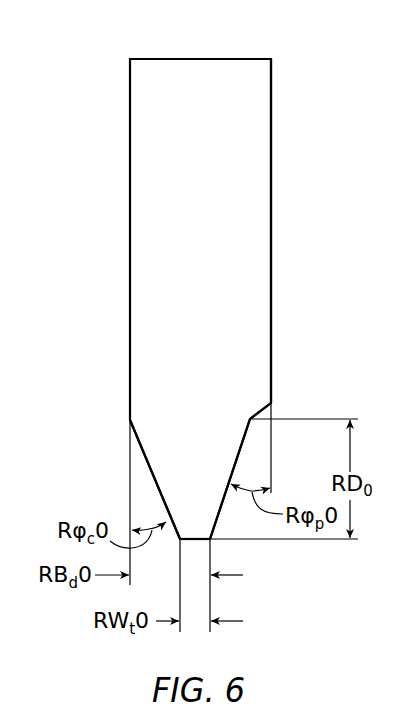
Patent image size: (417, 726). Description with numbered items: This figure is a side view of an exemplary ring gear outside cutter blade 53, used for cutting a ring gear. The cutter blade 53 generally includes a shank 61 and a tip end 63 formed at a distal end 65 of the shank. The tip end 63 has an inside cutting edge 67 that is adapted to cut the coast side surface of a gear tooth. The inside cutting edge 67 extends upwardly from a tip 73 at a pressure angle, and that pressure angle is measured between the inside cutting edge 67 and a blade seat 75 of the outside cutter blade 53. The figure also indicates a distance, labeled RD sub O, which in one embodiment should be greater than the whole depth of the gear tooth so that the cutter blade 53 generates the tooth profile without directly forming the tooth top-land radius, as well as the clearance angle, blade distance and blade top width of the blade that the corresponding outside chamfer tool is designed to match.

The ring gear outside cutter blade 53 is at (306, 61).
The shank 61 is at (156, 93).
The tip end 63 is at (80, 463).
The distal end 65 is at (274, 403).
The cutting edge 67 is at (241, 452).
The tip 73 is at (213, 541).
The blade seat 75 is at (274, 127).